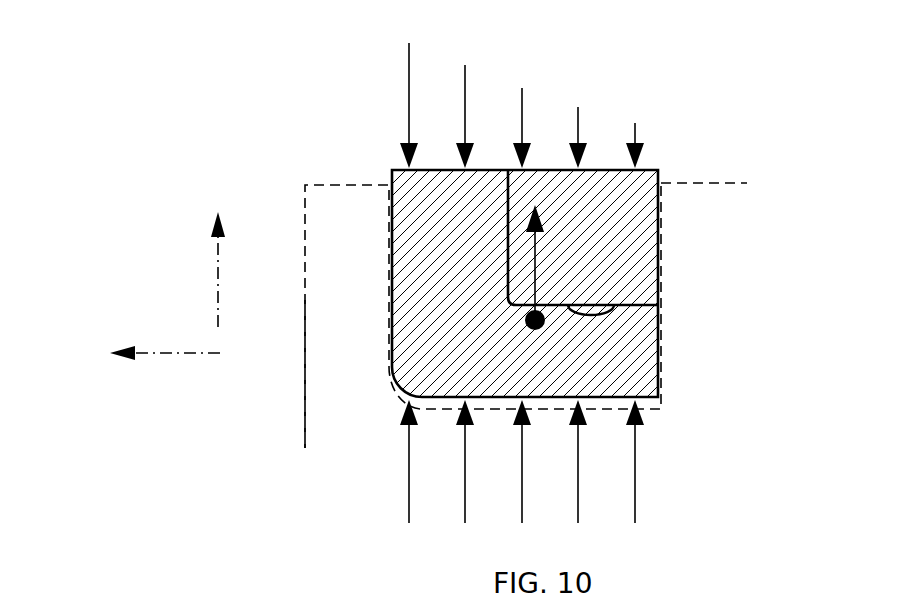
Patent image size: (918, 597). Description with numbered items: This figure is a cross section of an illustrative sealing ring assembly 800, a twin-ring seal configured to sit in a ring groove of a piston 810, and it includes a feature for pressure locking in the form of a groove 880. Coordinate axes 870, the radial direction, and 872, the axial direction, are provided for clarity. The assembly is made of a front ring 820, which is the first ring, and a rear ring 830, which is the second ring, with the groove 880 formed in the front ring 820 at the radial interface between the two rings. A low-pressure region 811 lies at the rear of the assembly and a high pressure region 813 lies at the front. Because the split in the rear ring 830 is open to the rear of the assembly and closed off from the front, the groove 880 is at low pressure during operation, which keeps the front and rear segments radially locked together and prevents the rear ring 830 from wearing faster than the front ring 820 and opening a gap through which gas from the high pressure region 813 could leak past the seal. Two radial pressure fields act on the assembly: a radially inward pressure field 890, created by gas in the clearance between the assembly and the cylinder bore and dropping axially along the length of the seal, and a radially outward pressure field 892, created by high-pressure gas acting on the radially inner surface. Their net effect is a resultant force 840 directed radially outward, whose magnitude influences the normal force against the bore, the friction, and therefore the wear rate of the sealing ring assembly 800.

The sealing ring assembly 800 is at (322, 37).
The piston 810 is at (362, 227).
The low-pressure region 811 is at (725, 172).
The high pressure region 813 is at (293, 421).
The front ring 820 is at (468, 249).
The rear ring 830 is at (622, 251).
The resultant force 840 is at (600, 312).
The coordinate axis (radial) 870 is at (240, 204).
The coordinate axis (axial) 872 is at (105, 367).
The groove 880 is at (610, 325).
The radial pressure field 890 is at (582, 97).
The radial pressure field 892 is at (573, 544).